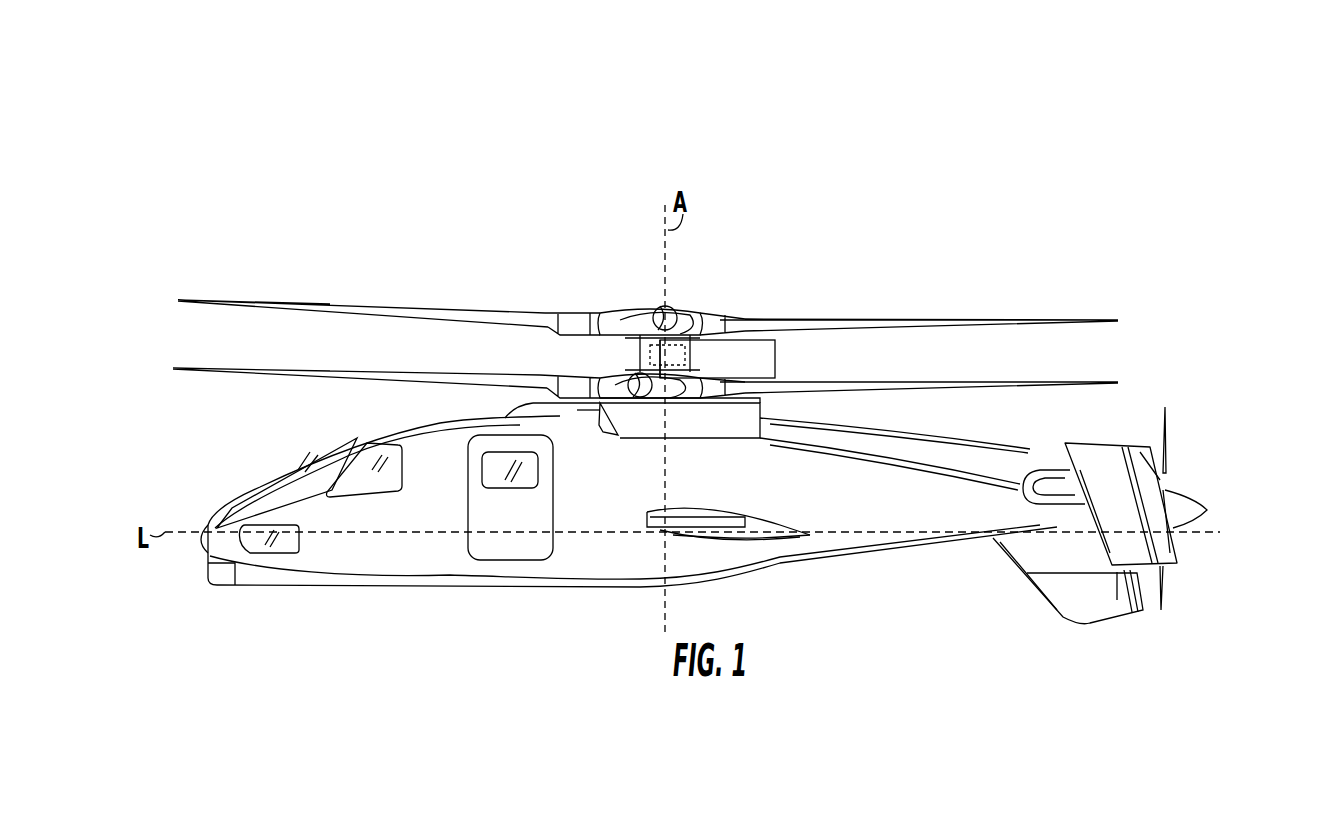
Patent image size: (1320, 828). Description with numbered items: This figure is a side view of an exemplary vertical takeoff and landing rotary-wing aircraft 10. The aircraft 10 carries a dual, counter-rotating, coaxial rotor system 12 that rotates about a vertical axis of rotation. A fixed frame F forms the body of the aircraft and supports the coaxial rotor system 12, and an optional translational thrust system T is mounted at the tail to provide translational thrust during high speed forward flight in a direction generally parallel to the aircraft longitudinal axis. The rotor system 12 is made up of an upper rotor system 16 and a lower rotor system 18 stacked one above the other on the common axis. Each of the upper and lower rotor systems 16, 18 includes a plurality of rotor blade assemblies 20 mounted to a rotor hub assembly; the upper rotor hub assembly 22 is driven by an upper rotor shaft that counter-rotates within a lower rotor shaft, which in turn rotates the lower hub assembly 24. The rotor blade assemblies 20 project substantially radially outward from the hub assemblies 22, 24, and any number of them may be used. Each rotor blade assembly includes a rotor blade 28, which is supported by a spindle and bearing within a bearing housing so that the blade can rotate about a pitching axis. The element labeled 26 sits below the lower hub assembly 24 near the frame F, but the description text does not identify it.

The rotary-wing aircraft 10 is at (200, 123).
The dual, counter-rotating, coaxial rotor system 12 is at (772, 283).
The upper rotor system 16 is at (685, 295).
The lower rotor system 18 is at (610, 362).
The rotor blade assemblies 20 is at (403, 368).
The rotor hub assembly 22 is at (605, 315).
The lower hub assembly 24 is at (660, 320).
The gearbox / transmission 26 is at (642, 428).
The rotor blade 28 is at (1008, 380).
The fixed frame F is at (420, 565).
The translational thrust system T is at (1187, 447).